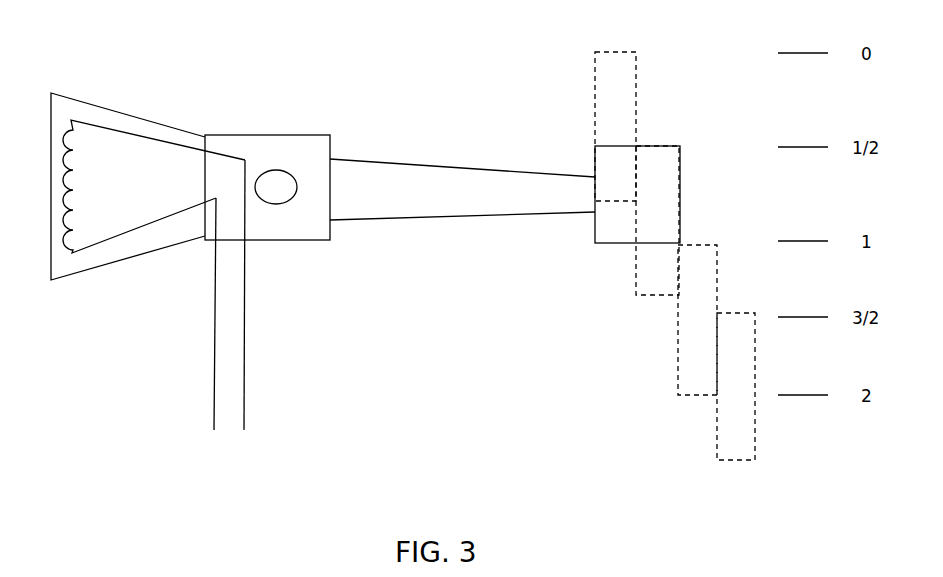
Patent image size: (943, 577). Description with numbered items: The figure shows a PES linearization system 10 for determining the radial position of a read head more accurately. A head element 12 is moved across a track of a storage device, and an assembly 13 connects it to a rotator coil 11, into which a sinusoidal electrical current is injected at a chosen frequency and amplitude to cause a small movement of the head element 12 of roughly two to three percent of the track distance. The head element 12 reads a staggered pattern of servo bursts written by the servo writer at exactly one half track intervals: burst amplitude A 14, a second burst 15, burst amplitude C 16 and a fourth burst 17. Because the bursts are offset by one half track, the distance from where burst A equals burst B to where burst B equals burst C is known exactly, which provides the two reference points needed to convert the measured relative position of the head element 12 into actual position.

The PES linearization system 10 is at (472, 95).
The rotator coil 11 is at (50, 180).
The head element 12 is at (592, 230).
The optics housing 13 is at (205, 118).
The burst amplitude A 14 is at (638, 108).
The sensor window B 15 is at (683, 210).
The burst amplitude C 16 is at (718, 300).
The sensor window D 17 is at (758, 383).